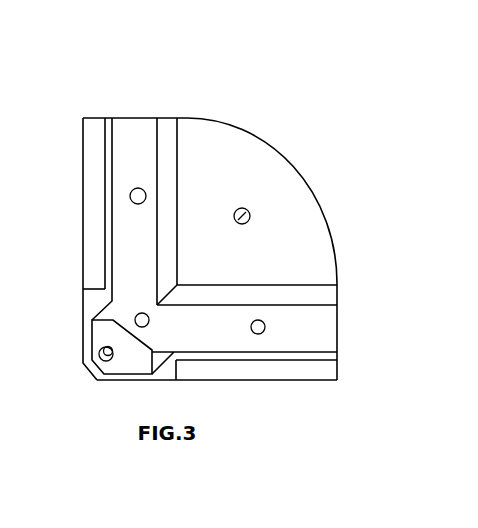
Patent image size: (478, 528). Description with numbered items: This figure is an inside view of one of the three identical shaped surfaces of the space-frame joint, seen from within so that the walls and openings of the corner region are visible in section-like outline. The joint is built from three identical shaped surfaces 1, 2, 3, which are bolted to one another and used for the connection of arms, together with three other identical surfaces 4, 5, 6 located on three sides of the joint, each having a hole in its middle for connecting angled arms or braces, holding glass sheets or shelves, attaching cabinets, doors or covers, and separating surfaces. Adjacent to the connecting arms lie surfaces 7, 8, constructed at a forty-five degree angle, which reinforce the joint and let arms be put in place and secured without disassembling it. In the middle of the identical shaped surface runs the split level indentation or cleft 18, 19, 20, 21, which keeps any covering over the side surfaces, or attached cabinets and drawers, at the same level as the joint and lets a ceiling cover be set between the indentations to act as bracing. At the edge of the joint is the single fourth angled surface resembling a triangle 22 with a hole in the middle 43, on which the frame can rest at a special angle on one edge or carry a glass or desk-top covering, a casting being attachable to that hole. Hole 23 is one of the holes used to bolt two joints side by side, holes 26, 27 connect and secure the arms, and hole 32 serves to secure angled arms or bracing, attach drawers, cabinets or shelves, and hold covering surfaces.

The identical shaped surface 1 is at (293, 335).
The identical shaped surface 2 is at (82, 351).
The identical shaped surface 3 is at (157, 378).
The identical surface with central hole 4 is at (212, 152).
The identical surface with central hole 5 is at (113, 160).
The identical surface with central hole 6 is at (297, 357).
The forty-five degree angled surface 7 is at (243, 297).
The forty-five degree angled surface 8 is at (163, 143).
The split level indentation 18 is at (180, 365).
The split level indentation 19 is at (258, 367).
The split level indentation 20 is at (95, 190).
The split level indentation 21 is at (90, 287).
The triangular angled surface 22 is at (132, 360).
The bolting hole 23 is at (135, 320).
The arm securing hole 26 is at (134, 188).
The arm securing hole 27 is at (263, 321).
The bracing and attachment hole 32 is at (249, 210).
The central hole of triangular surface 43 is at (100, 358).